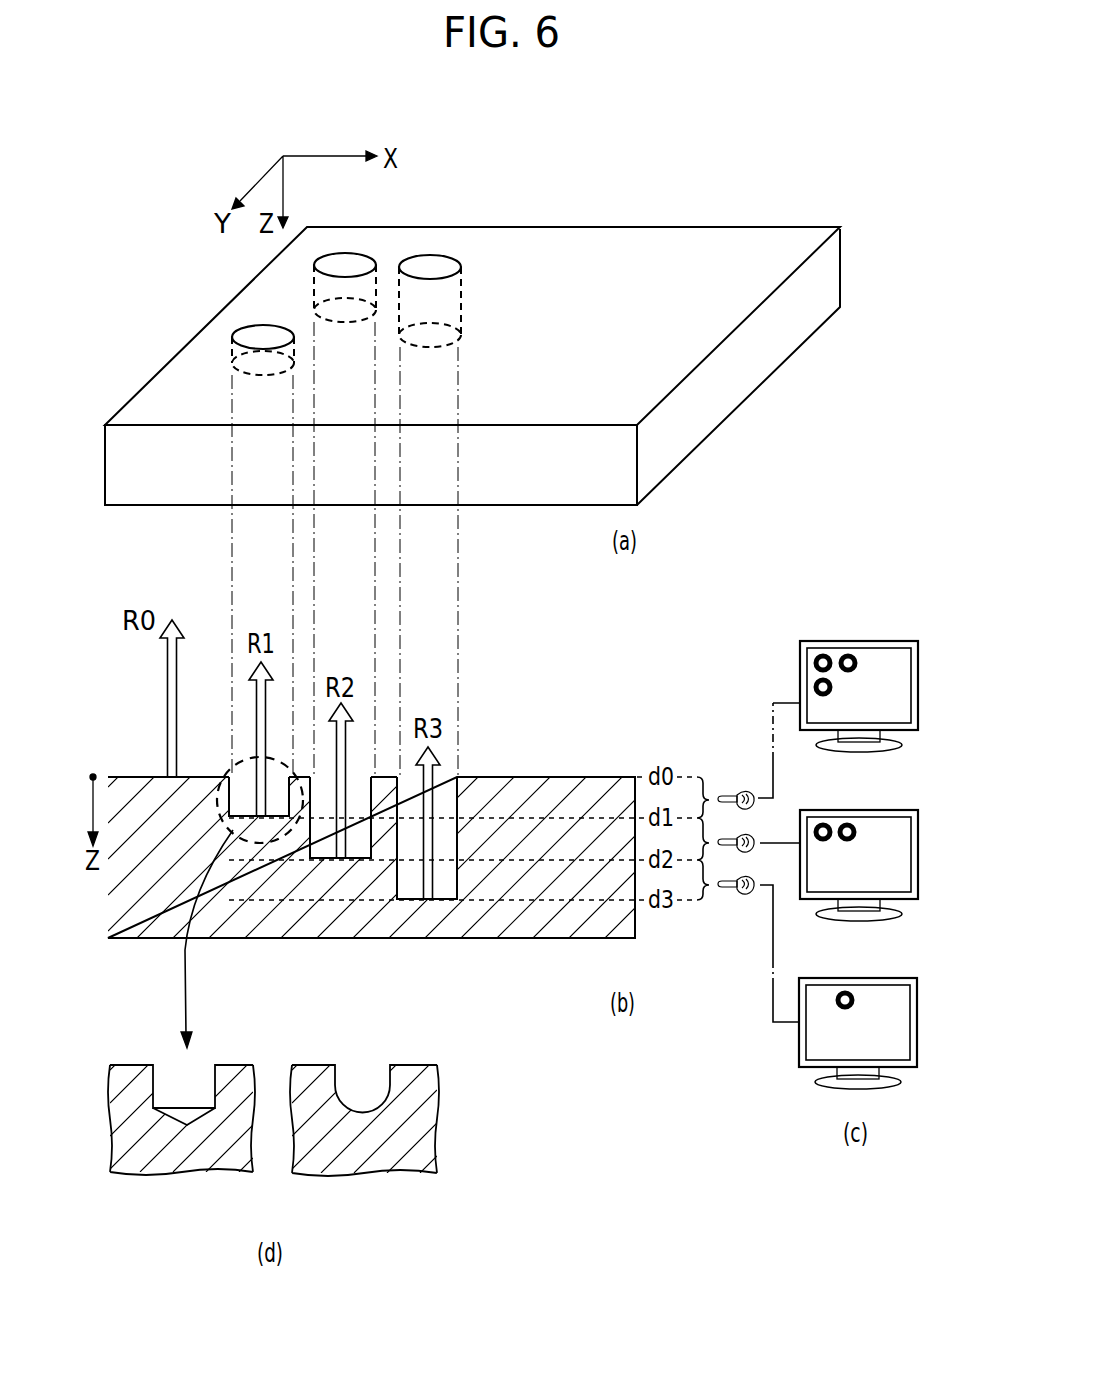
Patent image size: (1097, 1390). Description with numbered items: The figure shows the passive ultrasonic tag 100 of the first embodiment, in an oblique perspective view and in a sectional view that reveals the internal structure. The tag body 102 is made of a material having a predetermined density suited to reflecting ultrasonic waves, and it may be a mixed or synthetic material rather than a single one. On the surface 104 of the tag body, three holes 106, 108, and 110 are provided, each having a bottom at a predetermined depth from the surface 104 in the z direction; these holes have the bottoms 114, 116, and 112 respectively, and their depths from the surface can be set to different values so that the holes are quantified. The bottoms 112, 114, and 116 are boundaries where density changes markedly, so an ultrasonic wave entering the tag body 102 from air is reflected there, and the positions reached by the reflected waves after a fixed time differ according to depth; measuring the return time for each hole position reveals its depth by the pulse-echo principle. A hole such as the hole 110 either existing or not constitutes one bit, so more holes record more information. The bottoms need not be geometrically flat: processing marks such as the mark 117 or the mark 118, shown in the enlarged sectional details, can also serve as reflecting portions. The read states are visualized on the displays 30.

The passive ultrasonic tag 100 is at (476, 577).
The tag body 102 is at (697, 427).
The surface of the tag body 104 is at (610, 323).
The hole 106 is at (345, 257).
The hole 108 is at (432, 258).
The hole 110 is at (233, 330).
The bottom 112 is at (257, 820).
The bottom 114 is at (353, 858).
The bottom 116 is at (442, 899).
The mark 117 is at (187, 1125).
The mark 118 is at (370, 1112).
The display 30 is at (870, 641).